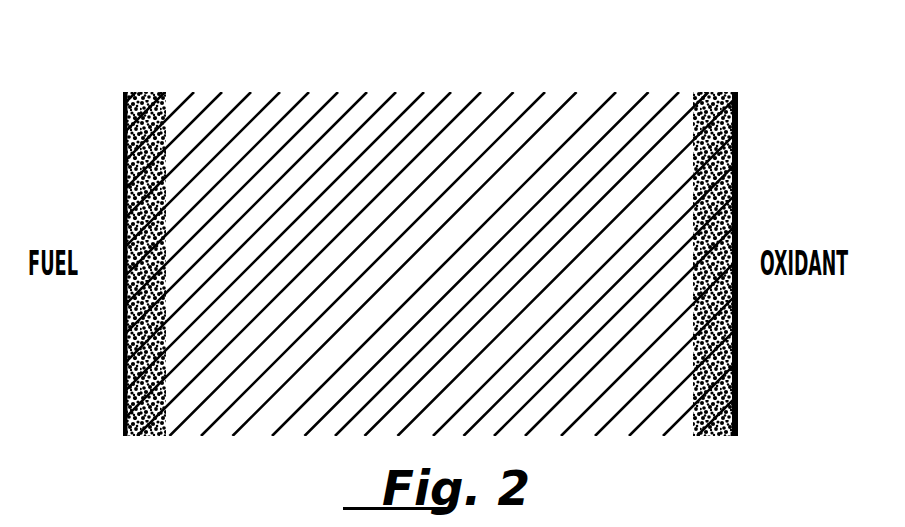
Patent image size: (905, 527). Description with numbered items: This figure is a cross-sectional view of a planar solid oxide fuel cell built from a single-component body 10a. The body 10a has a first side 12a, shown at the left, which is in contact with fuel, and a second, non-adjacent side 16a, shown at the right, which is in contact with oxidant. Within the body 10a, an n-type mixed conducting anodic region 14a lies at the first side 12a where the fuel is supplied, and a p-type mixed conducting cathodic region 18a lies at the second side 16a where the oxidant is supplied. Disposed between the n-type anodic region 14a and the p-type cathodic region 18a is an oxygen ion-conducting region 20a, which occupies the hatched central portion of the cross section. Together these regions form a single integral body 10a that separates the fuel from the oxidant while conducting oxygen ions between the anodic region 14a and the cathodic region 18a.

The single-component body 10a is at (452, 218).
The first side 12a is at (123, 163).
The n-type mixed conducting anodic region 14a is at (135, 92).
The second side 16a is at (738, 183).
The p-type mixed conducting cathodic region 18a is at (723, 96).
The oxygen ion-conducting region 20a is at (487, 138).